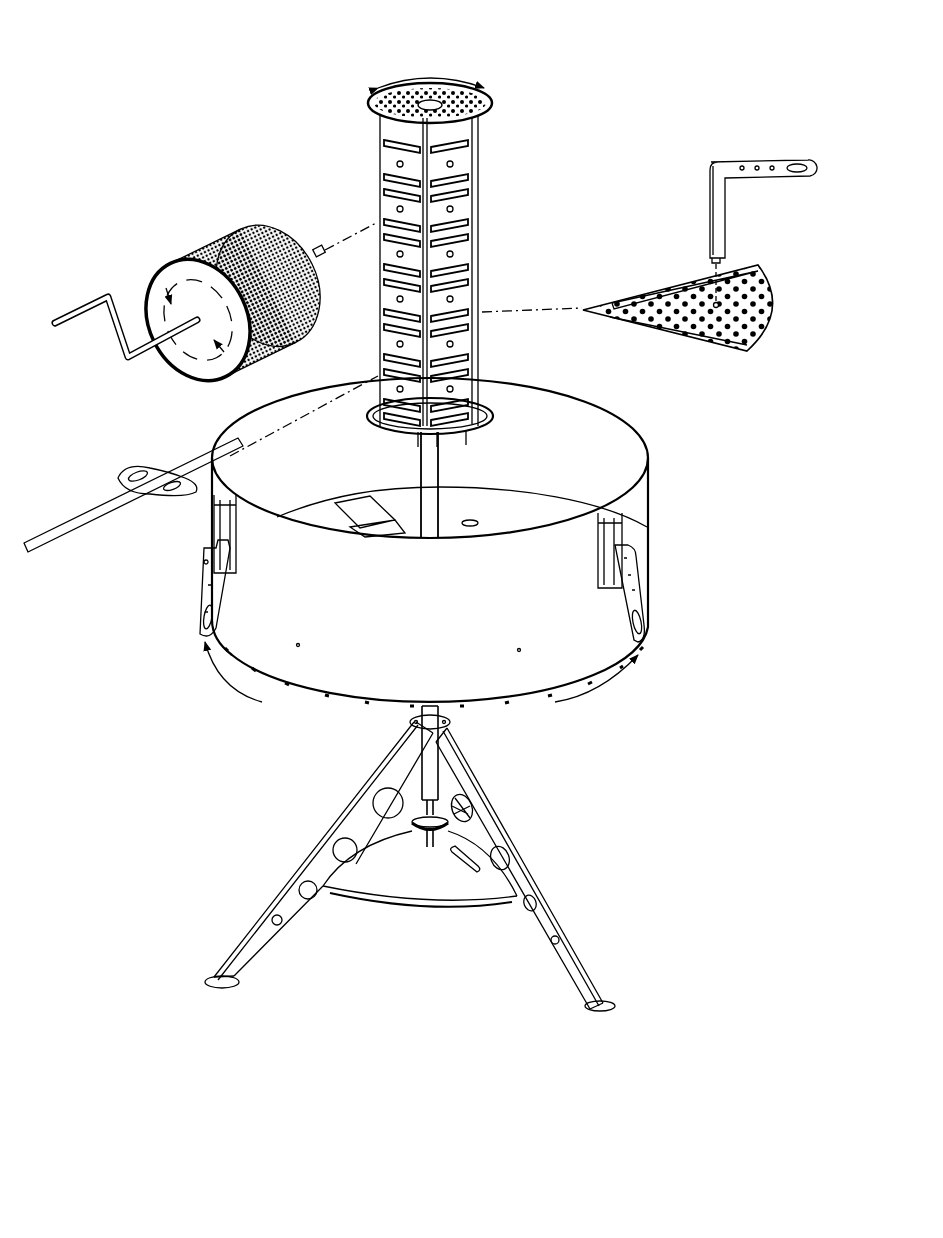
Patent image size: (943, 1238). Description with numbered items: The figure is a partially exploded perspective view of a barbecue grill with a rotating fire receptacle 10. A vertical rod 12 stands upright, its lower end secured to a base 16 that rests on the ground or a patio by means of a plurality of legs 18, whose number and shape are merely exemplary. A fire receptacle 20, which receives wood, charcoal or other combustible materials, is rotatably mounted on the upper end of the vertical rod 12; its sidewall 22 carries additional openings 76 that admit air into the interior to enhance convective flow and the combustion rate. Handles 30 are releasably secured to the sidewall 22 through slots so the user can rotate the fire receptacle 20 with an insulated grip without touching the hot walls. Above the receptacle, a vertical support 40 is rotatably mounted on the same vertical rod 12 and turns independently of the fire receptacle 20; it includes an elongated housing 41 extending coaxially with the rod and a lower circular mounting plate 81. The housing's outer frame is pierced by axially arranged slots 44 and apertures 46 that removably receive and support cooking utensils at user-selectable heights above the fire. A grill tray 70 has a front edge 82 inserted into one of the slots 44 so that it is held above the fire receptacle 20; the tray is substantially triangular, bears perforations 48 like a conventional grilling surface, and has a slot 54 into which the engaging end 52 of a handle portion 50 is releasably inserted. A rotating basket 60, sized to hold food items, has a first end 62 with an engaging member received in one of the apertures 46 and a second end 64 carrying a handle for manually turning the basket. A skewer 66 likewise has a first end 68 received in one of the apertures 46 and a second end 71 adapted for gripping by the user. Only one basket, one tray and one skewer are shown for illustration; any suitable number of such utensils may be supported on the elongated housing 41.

The barbecue grill with a rotating fire receptacle 10 is at (137, 50).
The vertical rod 12 is at (420, 455).
The base 16 is at (207, 798).
The legs 18 is at (345, 812).
The fire receptacle 20 is at (670, 412).
The sidewall 22 is at (430, 540).
The handles 30 is at (205, 552).
The vertical support 40 is at (494, 178).
The elongated housing 41 is at (380, 147).
The slots 44 is at (455, 196).
The apertures 46 is at (462, 166).
The perforations 48 is at (757, 345).
The handle portion 50 is at (781, 178).
The engaging end 52 is at (710, 257).
The slot 54 is at (720, 303).
The rotating basket 60 is at (232, 240).
The first end 62 is at (322, 248).
The second end 64 is at (80, 300).
The skewer 66 is at (182, 505).
The first end 68 is at (245, 440).
The grill tray 70 is at (622, 258).
The second end 71 is at (60, 530).
The openings 76 is at (325, 706).
The lower circular mounting plate 81 is at (487, 425).
The front edge 82 is at (585, 305).